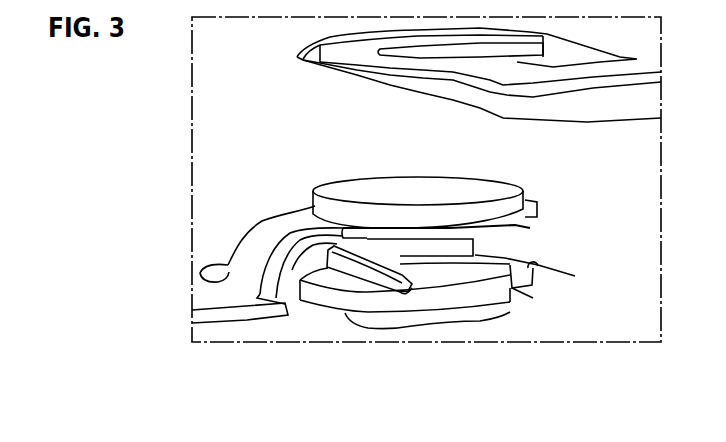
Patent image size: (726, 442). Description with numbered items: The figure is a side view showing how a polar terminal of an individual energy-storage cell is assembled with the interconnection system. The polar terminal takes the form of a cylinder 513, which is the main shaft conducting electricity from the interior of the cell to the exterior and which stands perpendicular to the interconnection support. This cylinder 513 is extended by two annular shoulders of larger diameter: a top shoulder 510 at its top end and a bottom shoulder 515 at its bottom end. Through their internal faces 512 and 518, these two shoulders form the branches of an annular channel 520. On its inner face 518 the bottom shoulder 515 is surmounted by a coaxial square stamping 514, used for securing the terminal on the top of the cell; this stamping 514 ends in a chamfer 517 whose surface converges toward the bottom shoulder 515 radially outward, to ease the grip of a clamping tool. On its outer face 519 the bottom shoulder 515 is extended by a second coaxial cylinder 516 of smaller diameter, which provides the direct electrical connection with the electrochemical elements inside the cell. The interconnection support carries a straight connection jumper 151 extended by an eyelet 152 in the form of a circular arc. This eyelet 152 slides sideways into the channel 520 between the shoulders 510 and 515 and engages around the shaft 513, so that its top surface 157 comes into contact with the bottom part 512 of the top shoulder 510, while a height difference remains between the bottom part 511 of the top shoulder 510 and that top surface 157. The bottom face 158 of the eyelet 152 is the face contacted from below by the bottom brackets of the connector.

The connection jumper 151 is at (258, 250).
The eyelet 152 is at (537, 217).
The top surface of the eyelet 157 is at (530, 202).
The bottom face of the eyelet 158 is at (537, 223).
The top shoulder 510 is at (464, 265).
The bottom part of the top shoulder 511 is at (512, 178).
The internal face of the top shoulder 512 is at (473, 238).
The cylinder (main shaft) 513 is at (477, 244).
The square stamping 514 is at (374, 283).
The bottom shoulder 515 is at (525, 299).
The second coaxial cylinder 516 is at (408, 300).
The chamfer 517 is at (403, 293).
The internal face of the bottom shoulder 518 is at (535, 272).
The outer face of the bottom shoulder 519 is at (510, 300).
The annular channel 520 is at (352, 241).